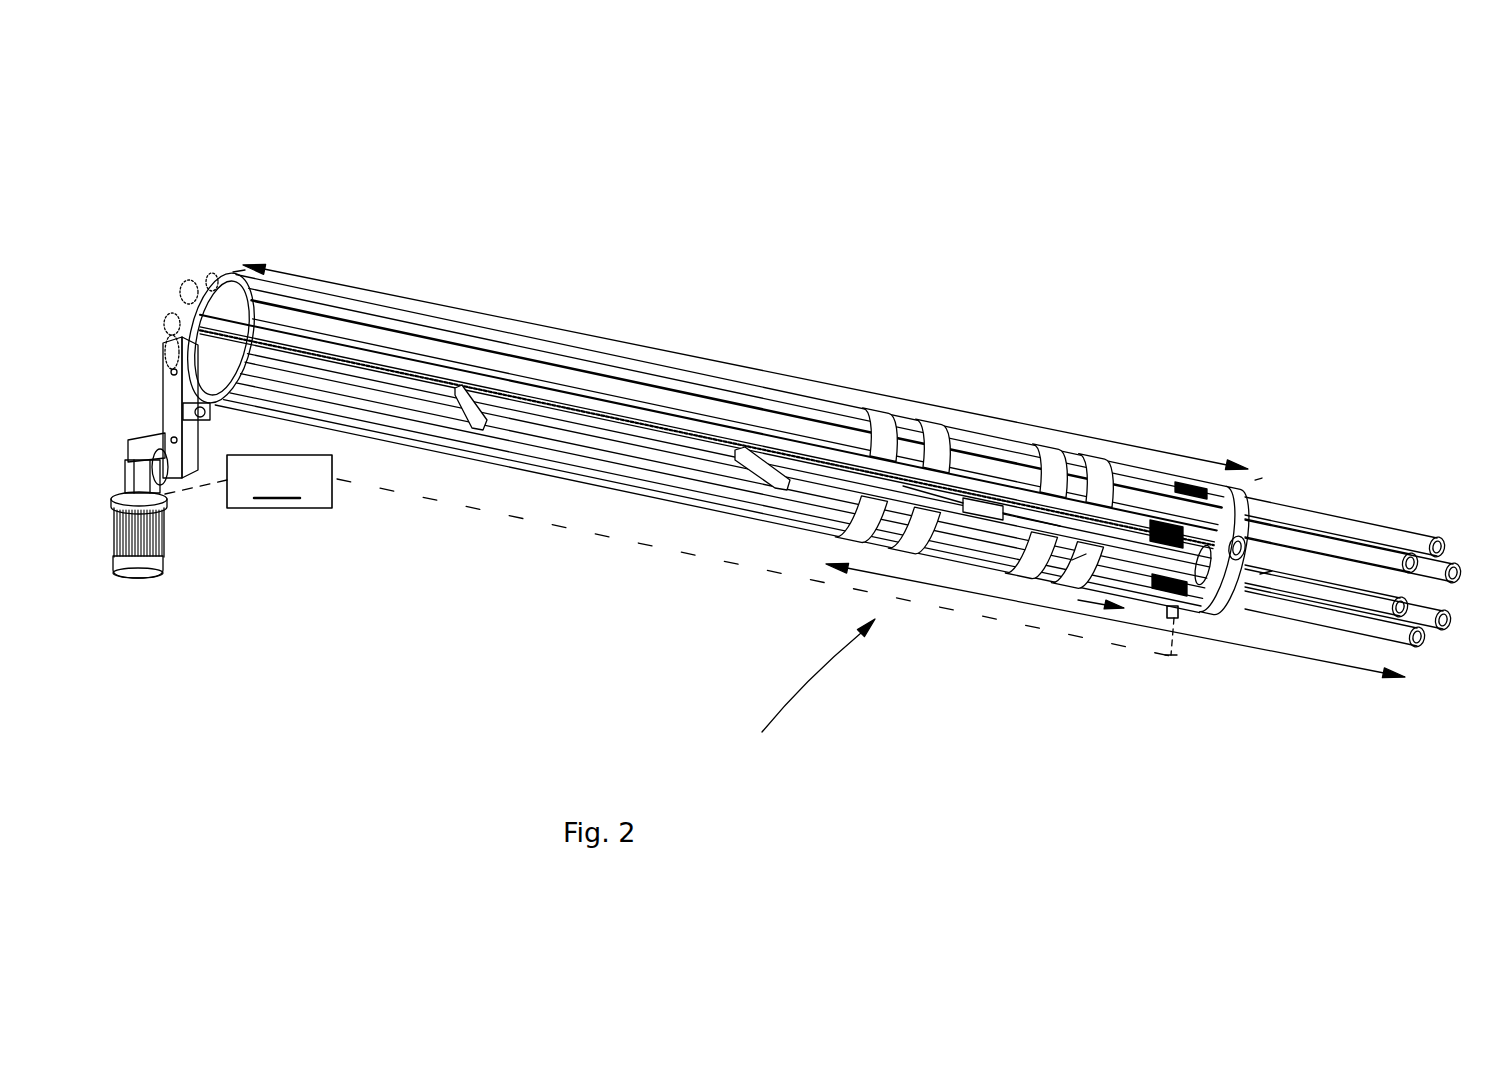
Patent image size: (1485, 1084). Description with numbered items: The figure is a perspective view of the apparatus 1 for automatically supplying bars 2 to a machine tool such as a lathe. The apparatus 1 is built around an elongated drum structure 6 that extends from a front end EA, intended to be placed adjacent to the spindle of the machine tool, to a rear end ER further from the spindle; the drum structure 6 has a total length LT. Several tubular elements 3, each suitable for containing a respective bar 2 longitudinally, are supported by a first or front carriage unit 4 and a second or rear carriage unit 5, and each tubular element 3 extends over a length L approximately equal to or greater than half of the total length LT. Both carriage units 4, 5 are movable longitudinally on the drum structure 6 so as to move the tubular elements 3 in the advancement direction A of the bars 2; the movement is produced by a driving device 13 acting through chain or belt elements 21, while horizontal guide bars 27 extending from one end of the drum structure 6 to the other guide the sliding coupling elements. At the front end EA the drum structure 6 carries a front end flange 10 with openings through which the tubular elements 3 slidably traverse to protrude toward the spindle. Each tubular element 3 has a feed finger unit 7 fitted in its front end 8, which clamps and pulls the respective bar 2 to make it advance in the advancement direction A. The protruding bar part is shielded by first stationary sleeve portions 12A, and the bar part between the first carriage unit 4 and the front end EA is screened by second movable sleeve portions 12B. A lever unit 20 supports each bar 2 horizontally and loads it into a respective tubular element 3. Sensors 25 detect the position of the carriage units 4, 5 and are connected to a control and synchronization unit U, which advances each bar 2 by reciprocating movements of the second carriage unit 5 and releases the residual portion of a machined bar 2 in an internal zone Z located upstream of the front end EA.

The apparatus 1 is at (834, 256).
The bar 2 is at (1000, 480).
The tubular element 3 is at (1283, 513).
The first carriage unit 4 is at (1062, 462).
The second carriage unit 5 is at (850, 493).
The drum structure 6 is at (383, 352).
The feed finger unit 7 is at (1409, 660).
The front end of the tubular element 8 is at (1405, 670).
The front end flange 10 is at (1217, 480).
The first stationary sleeve portions 12A is at (1267, 571).
The second movable sleeve portions 12B is at (1078, 555).
The driving device 13 is at (138, 294).
The lever unit 20 is at (755, 466).
The chain or belt elements 21 is at (1197, 480).
The sensors 25 is at (1180, 612).
The horizontal guide bars 27 is at (510, 348).
The control and synchronization unit U is at (667, 555).
The length of the tubular element L is at (1150, 627).
The total length of the drum structure LT is at (845, 385).
The advancement direction A is at (1077, 598).
The internal zone Z is at (806, 695).
The rear end ER is at (229, 246).
The front end EA is at (1272, 459).